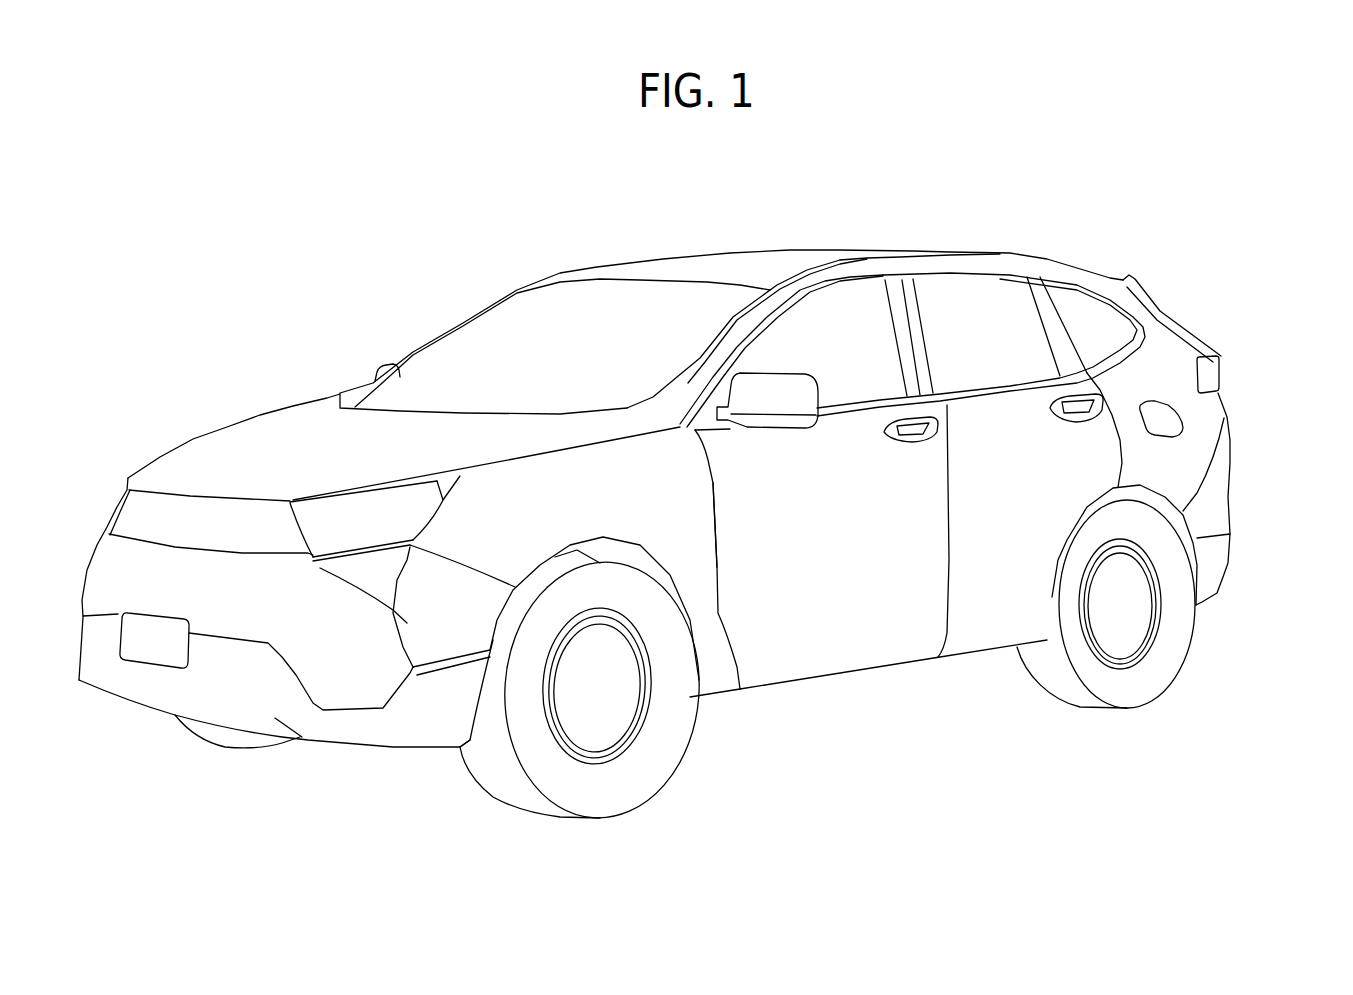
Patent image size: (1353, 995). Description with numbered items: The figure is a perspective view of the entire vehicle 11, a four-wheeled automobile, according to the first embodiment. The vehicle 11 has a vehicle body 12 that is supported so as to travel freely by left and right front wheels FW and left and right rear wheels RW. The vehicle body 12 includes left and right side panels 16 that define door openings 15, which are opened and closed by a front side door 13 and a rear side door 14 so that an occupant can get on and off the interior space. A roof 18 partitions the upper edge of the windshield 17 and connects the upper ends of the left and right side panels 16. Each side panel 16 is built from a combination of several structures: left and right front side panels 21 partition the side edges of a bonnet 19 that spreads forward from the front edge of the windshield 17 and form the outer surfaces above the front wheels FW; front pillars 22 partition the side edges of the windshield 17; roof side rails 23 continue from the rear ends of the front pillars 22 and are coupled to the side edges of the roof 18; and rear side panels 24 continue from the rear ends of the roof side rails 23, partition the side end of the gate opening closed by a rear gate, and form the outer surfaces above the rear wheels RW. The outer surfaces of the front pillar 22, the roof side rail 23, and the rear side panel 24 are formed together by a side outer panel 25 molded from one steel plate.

The vehicle 11 is at (1133, 229).
The vehicle body 12 is at (318, 388).
The front side door 13 is at (823, 663).
The rear side door 14 is at (987, 640).
The door opening 15 is at (707, 486).
The side panel 16 is at (1178, 448).
The windshield 17 is at (533, 309).
The roof 18 is at (728, 268).
The bonnet 19 is at (213, 462).
The front side panel 21 is at (703, 500).
The front pillar 22 is at (412, 349).
The roof side rail 23 is at (962, 262).
The rear side panel 24 is at (1189, 353).
The side outer panel 25 is at (1160, 321).
The front wheel FW is at (643, 767).
The rear wheel RW is at (1192, 635).